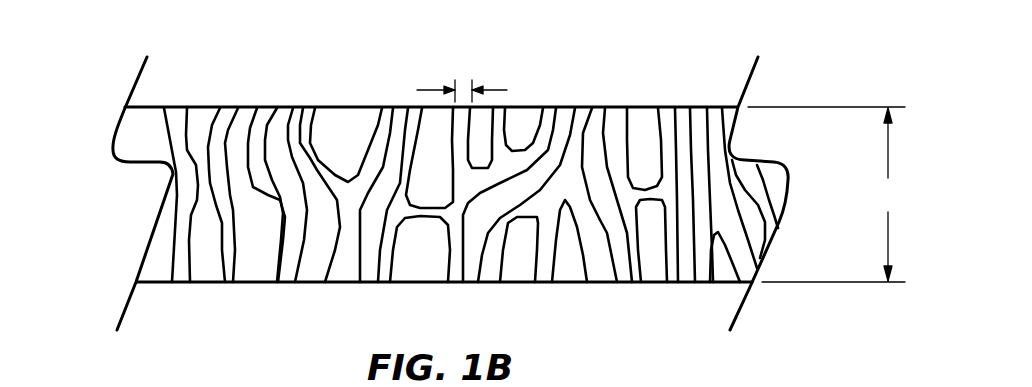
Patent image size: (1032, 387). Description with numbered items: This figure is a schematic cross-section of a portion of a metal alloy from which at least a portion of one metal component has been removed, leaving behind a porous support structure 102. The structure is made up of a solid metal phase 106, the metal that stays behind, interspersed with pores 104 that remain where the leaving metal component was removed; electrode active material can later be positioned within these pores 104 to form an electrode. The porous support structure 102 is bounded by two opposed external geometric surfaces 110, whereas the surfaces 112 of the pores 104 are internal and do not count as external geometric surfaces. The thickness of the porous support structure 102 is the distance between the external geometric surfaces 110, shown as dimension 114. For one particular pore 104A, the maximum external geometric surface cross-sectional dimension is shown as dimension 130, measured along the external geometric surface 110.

The porous support structure 102 is at (107, 102).
The pores 104 is at (175, 120).
The pore 104A is at (458, 140).
The solid metal phase 106 is at (343, 128).
The external geometric surfaces 110 is at (527, 107).
The surfaces of pores 112 is at (613, 127).
The dimension 114 is at (826, 194).
The dimension 130 is at (462, 81).